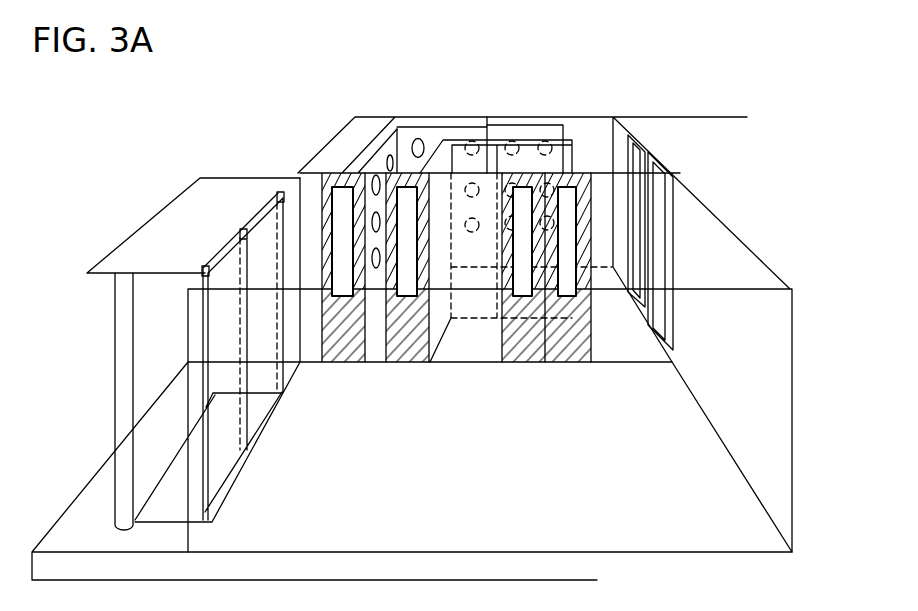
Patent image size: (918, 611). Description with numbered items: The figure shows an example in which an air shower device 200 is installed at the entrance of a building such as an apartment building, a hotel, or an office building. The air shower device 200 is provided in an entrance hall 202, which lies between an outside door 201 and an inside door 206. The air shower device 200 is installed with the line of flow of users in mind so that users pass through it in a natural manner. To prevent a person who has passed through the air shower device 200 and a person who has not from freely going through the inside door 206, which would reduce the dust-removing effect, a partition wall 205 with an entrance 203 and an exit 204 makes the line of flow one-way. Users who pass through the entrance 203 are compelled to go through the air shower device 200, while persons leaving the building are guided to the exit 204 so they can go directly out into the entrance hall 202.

The air shower device 200 is at (422, 126).
The outside door 201 is at (266, 208).
The entrance hall 202 is at (412, 471).
The entrance 203 is at (336, 180).
The exit 204 is at (564, 186).
The partition wall 205 is at (474, 172).
The inside door 206 is at (670, 172).